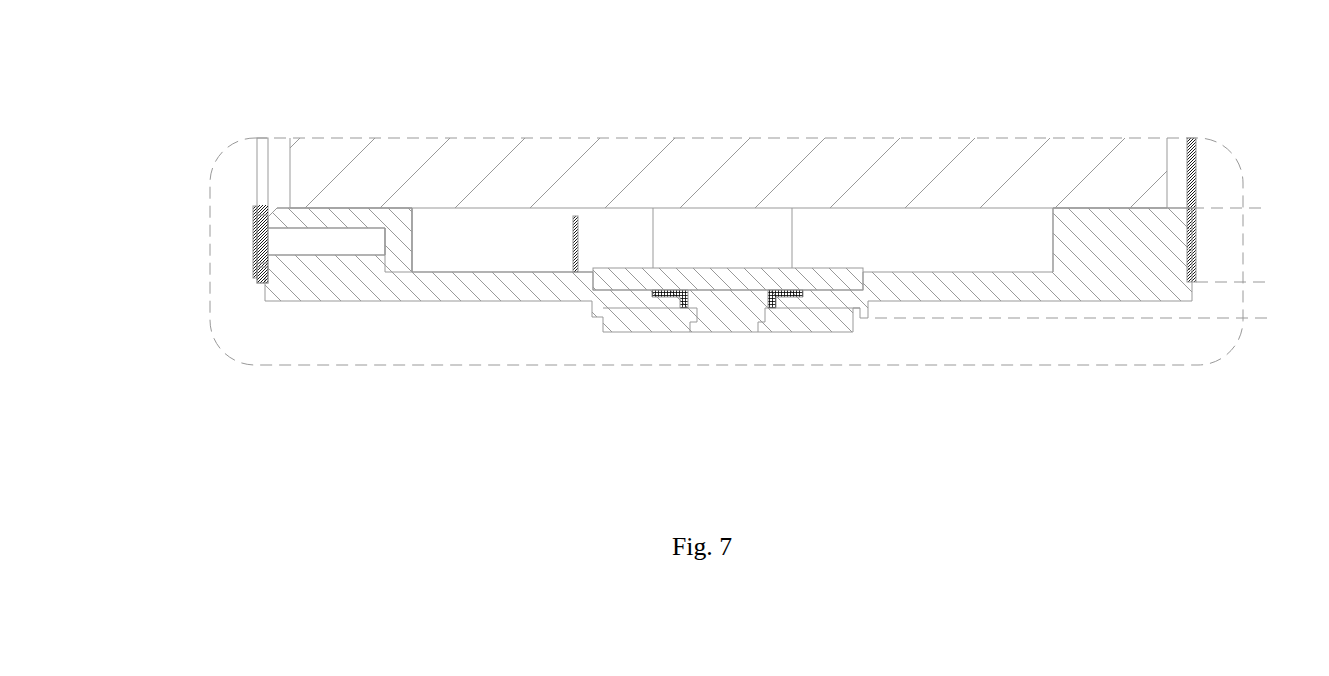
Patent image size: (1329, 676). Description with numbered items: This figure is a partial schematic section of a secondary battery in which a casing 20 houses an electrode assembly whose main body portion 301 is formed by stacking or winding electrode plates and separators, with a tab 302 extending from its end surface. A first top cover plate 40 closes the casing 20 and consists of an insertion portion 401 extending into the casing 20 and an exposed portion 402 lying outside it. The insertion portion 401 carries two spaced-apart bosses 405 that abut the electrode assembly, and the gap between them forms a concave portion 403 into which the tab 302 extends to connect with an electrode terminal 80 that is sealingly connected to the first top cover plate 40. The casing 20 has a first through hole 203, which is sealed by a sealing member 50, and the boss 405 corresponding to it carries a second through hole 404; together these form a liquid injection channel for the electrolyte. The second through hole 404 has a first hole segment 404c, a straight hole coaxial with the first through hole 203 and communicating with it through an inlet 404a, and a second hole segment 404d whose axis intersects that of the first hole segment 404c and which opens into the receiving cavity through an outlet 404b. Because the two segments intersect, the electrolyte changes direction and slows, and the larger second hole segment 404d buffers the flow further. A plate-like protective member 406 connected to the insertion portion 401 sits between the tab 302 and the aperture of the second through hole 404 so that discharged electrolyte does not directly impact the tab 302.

The casing 20 is at (262, 187).
The sealing member 50 is at (257, 238).
The first through hole 203 is at (259, 250).
The main body portion 301 is at (916, 156).
The tab 302 is at (685, 238).
The first top cover plate 40 is at (1012, 290).
The insertion portion 401 is at (1268, 208).
The exposed portion 402 is at (1268, 282).
The concave portion 403 is at (497, 243).
The second through hole 404 is at (340, 263).
The inlet 404a is at (263, 244).
The outlet 404b is at (370, 212).
The first hole segment 404c is at (328, 243).
The second hole segment 404d is at (374, 235).
The boss 405 is at (410, 217).
The protective member 406 is at (567, 250).
The electrode terminal 80 is at (727, 308).